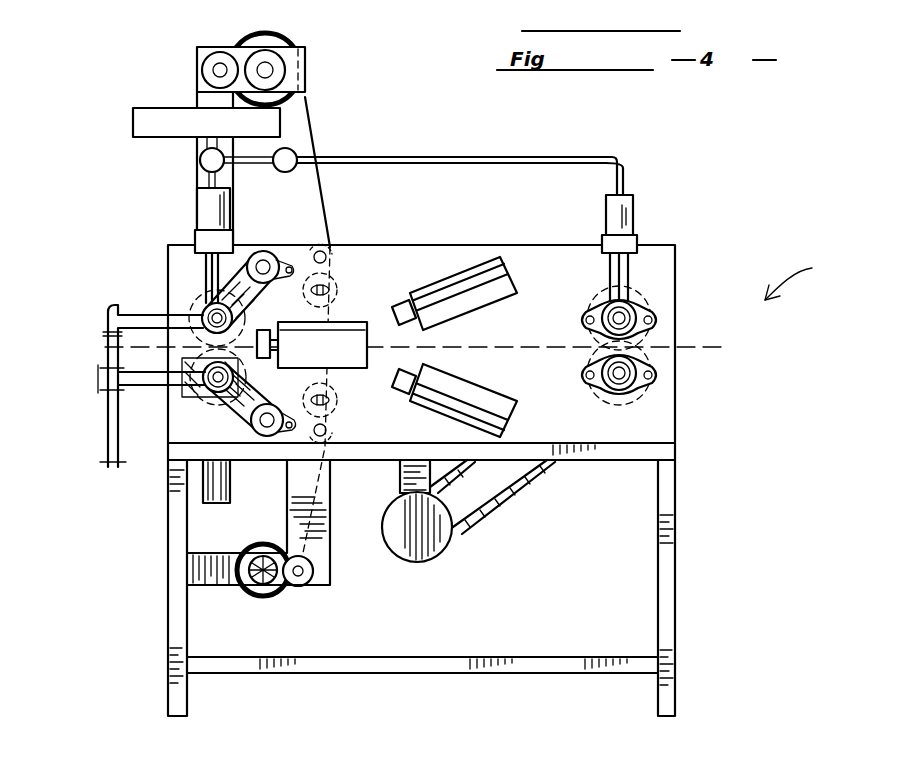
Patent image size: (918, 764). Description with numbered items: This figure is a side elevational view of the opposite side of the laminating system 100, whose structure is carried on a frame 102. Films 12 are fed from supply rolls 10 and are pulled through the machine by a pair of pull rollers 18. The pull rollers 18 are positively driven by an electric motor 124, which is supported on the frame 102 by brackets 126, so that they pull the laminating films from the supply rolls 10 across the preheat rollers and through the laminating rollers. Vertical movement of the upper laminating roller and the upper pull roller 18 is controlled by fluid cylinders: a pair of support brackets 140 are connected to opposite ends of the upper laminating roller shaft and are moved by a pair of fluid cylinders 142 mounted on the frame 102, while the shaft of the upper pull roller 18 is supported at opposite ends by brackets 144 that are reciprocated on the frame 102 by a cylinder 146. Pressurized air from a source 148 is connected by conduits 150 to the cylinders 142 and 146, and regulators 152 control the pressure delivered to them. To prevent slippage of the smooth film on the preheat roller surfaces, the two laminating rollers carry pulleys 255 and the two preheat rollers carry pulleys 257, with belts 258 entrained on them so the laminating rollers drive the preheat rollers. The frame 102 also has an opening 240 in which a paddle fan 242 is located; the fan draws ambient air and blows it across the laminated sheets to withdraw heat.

The supply roll 10 is at (281, 45).
The film 12 is at (305, 97).
The pull roller 18 is at (650, 278).
The laminating system 100 is at (809, 278).
The frame 102 is at (676, 515).
The electric motor 124 is at (420, 563).
The bracket 126 is at (392, 470).
The support bracket 140 is at (200, 312).
The fluid cylinder 142 is at (205, 210).
The bracket 144 is at (636, 324).
The cylinder 146 is at (633, 212).
The source of pressurized air 148 is at (133, 118).
The conduit 150 is at (398, 157).
The regulator 152 is at (200, 158).
The opening 240 is at (332, 330).
The paddle fan 242 is at (332, 360).
The pulley 255 is at (200, 393).
The pulley 257 is at (266, 447).
The belt 258 is at (217, 412).